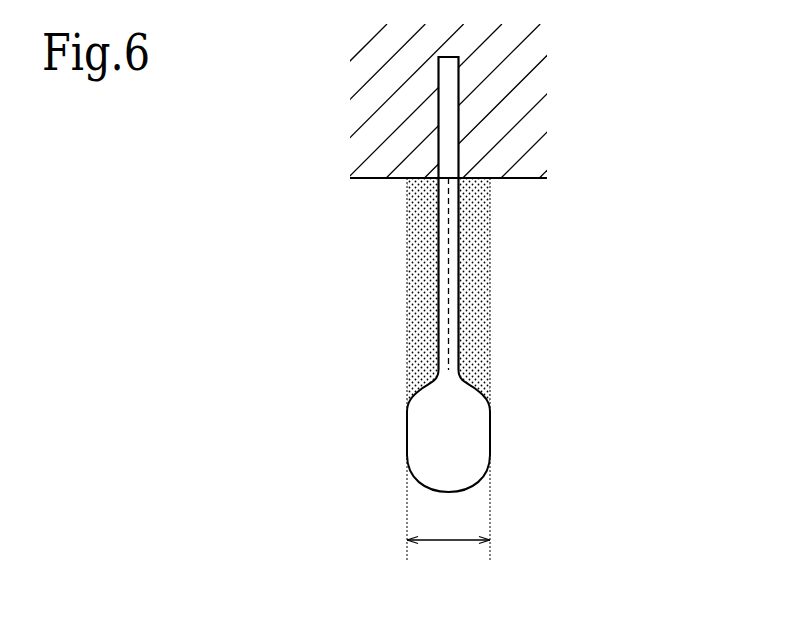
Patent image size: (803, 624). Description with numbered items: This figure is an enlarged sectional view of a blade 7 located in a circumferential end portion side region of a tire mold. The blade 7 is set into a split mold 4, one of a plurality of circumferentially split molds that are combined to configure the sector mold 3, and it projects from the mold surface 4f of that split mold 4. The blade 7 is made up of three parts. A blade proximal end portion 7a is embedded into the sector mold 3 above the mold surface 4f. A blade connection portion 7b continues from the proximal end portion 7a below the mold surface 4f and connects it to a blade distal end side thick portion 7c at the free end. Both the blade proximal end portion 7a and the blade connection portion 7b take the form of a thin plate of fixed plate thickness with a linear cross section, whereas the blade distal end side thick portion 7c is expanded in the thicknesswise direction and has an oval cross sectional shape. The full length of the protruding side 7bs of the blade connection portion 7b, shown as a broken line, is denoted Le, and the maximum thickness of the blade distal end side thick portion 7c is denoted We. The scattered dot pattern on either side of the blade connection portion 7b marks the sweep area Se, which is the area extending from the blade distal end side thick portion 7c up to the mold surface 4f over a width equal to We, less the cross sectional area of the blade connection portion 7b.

The split mold 4 is at (463, 135).
The sector mold 3 is at (463, 135).
The mold surface 4f is at (515, 178).
The blade 7 is at (522, 274).
The blade proximal end portion 7a is at (448, 128).
The blade connection portion 7b is at (559, 274).
The protruding side of the blade connection portion 7bs is at (460, 295).
The blade distal end side thick portion 7c is at (493, 435).
The sweep area Se is at (417, 301).
The full length of the protruding side Le is at (452, 342).
The maximum width of the thick portion We is at (448, 373).